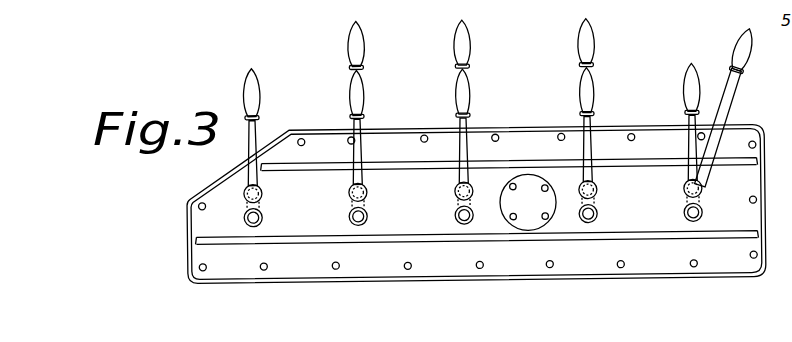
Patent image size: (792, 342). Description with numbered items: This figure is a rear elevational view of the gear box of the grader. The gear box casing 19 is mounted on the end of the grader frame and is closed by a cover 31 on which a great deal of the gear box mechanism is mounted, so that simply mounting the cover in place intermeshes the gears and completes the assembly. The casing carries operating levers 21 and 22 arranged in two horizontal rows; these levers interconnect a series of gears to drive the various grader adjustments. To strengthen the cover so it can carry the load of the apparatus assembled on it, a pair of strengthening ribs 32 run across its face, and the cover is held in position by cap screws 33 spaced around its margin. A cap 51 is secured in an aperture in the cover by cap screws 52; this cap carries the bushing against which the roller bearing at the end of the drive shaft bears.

The gear box casing 19 is at (323, 128).
The operating lever 21 is at (584, 47).
The operating lever 22 is at (588, 84).
The cover 31 is at (740, 140).
The strengthening ribs 32 is at (636, 234).
The cap screws 33 is at (558, 135).
The cap 51 is at (525, 220).
The cap screws 52 is at (548, 190).